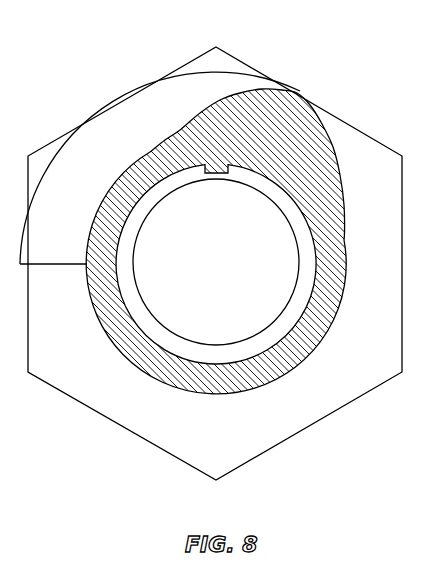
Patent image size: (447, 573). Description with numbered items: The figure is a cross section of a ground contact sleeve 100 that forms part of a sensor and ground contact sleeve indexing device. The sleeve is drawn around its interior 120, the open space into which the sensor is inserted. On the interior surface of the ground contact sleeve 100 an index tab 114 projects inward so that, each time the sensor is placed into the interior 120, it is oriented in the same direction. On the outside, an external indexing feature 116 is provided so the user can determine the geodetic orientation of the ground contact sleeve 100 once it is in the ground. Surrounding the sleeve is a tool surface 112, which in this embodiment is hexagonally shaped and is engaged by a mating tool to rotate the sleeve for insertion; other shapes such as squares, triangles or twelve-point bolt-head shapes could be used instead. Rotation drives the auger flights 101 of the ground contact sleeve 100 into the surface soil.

The ground contact sleeve 100 is at (223, 286).
The auger flights 101 is at (137, 118).
The tool surface 112 is at (312, 403).
The index tab 114 is at (215, 176).
The external indexing feature 116 is at (275, 85).
The interior 120 is at (238, 306).